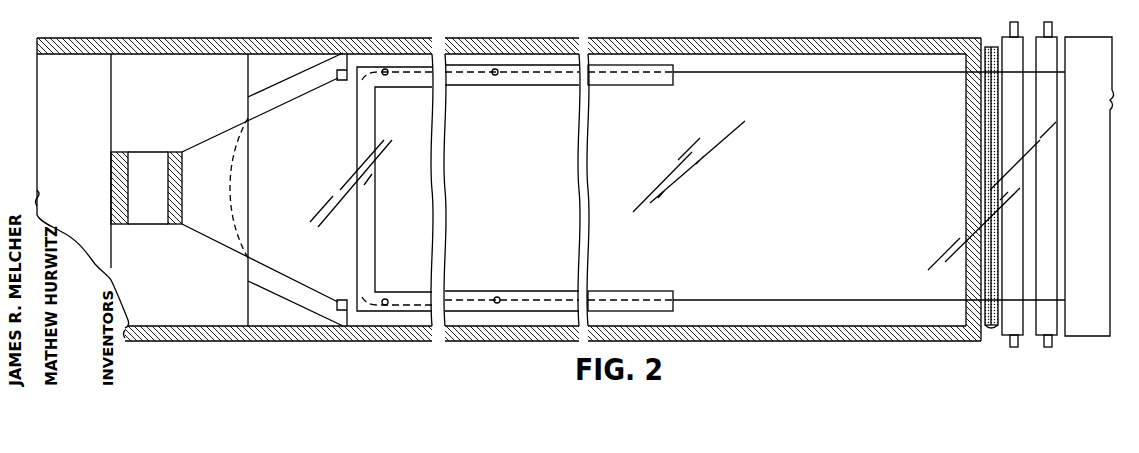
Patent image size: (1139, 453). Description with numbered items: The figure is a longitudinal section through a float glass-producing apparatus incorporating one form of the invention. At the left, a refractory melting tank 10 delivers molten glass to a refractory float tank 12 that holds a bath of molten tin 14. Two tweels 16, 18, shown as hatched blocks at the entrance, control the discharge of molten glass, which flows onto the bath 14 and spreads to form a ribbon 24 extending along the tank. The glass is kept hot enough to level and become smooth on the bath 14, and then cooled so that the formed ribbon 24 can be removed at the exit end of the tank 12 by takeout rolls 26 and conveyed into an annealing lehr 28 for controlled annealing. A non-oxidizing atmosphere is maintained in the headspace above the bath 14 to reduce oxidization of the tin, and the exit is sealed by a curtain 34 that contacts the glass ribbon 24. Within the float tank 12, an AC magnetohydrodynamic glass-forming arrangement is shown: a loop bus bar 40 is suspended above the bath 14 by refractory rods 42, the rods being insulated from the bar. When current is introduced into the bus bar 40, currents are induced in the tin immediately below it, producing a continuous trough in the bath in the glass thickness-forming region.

The refractory melting tank 10 is at (93, 38).
The refractory float tank 12 is at (396, 38).
The bath of molten tin 14 is at (798, 62).
The tweel 16 is at (120, 158).
The tweel 18 is at (176, 158).
The ribbon 24 is at (782, 194).
The takeout rolls 26 is at (1038, 330).
The annealing lehr 28 is at (1097, 226).
The curtain 34 is at (992, 47).
The loop bus bar 40 is at (362, 150).
The refractory rods 42 is at (385, 75).